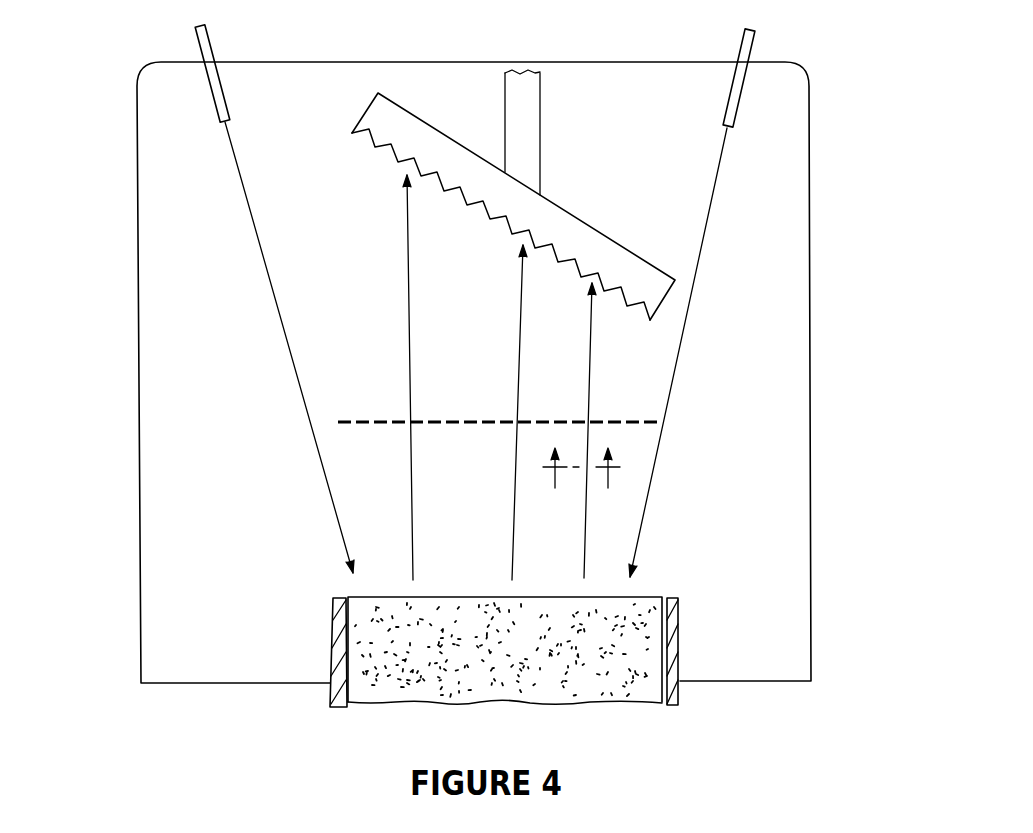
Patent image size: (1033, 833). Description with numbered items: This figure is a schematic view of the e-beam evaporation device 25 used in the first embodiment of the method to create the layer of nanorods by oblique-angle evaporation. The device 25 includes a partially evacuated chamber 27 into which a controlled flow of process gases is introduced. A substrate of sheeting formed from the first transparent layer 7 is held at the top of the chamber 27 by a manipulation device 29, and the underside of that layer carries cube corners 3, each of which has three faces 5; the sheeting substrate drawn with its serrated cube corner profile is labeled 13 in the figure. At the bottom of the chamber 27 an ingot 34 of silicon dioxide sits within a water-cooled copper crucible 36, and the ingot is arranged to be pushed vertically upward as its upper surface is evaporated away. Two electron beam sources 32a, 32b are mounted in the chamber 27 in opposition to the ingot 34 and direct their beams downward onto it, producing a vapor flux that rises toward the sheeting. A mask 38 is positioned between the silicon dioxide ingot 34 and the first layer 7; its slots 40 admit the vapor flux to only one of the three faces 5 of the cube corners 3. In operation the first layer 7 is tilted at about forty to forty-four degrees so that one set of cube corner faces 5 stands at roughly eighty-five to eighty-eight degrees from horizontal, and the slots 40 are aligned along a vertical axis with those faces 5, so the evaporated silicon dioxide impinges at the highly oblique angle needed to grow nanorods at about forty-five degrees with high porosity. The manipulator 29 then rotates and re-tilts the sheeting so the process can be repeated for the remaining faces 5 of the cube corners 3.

The e-beam evaporation device 25 is at (108, 97).
The partially evacuated chamber 27 is at (137, 258).
The electron beam source 32a is at (240, 30).
The electron beam source 32b is at (738, 50).
The manipulation device 29 is at (527, 128).
The diffraction grating 13 is at (352, 100).
The first transparent layer 7 is at (525, 208).
The cube corners 3 is at (402, 158).
The mask 38 is at (640, 413).
The slots 40 is at (465, 428).
The cube corner faces 5 is at (581, 484).
The silicon dioxide ingot 34 is at (525, 661).
The copper crucible 36 is at (678, 640).